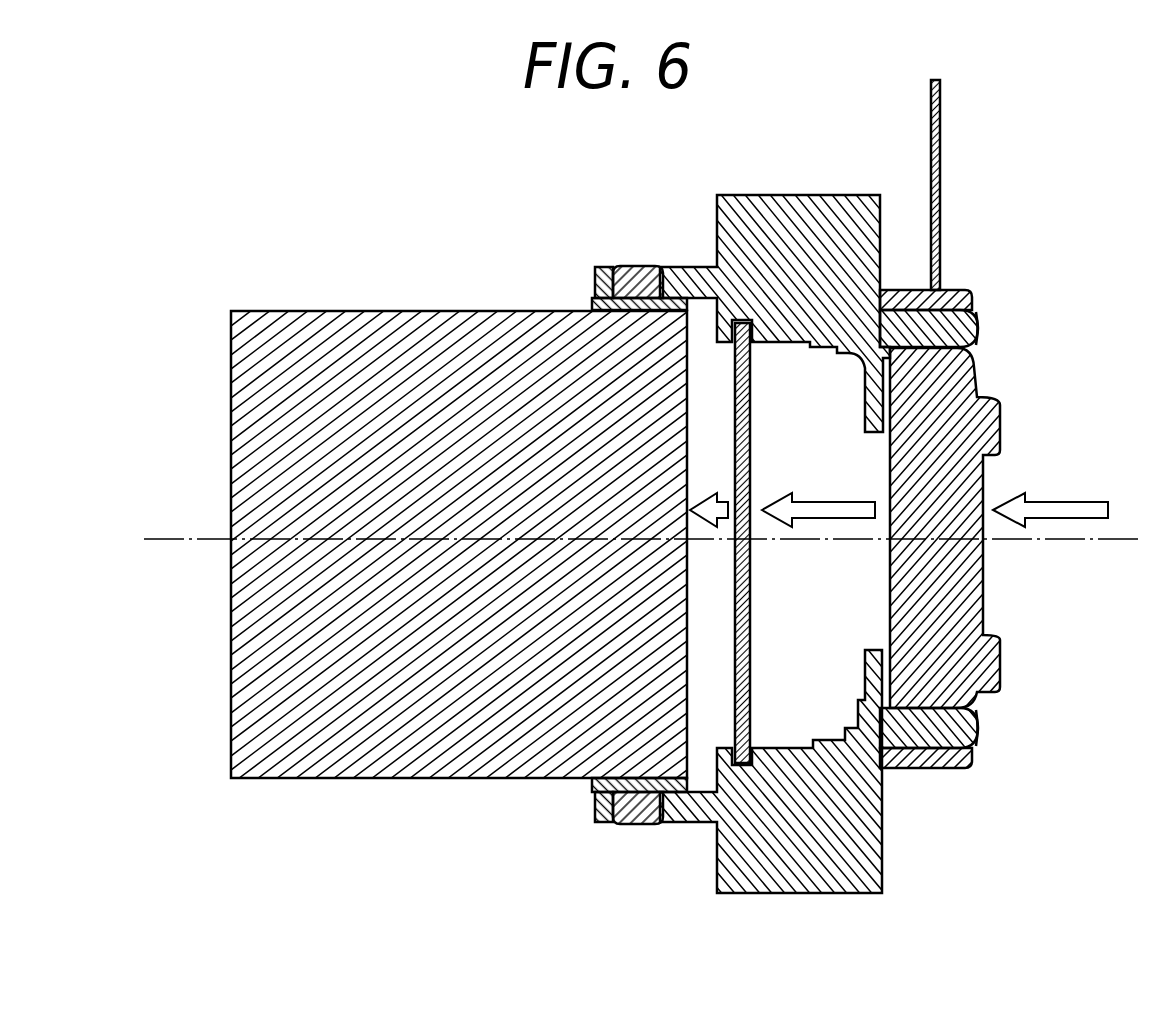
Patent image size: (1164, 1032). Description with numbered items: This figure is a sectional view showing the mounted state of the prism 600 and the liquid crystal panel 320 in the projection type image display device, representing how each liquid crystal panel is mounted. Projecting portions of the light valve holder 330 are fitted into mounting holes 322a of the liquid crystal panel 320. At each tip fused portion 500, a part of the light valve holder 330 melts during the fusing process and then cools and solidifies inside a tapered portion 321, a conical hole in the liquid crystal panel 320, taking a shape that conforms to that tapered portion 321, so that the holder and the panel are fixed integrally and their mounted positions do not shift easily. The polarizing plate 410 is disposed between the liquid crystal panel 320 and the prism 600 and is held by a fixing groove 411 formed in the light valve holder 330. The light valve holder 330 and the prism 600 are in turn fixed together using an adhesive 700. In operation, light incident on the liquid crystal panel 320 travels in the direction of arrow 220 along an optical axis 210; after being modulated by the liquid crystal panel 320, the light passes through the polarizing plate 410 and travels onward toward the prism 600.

The optical axis 210 is at (1043, 539).
The arrow 220 is at (1087, 503).
The liquid crystal panel 320 is at (928, 463).
The tapered portion 321 is at (953, 292).
The mounting hole 322a is at (978, 332).
The light valve holder 330 is at (815, 212).
The polarizing plate 410 is at (752, 655).
The fixing groove 411 is at (745, 767).
The tip fused portion 500 is at (970, 317).
The prism 600 is at (437, 345).
The adhesive 700 is at (640, 270).